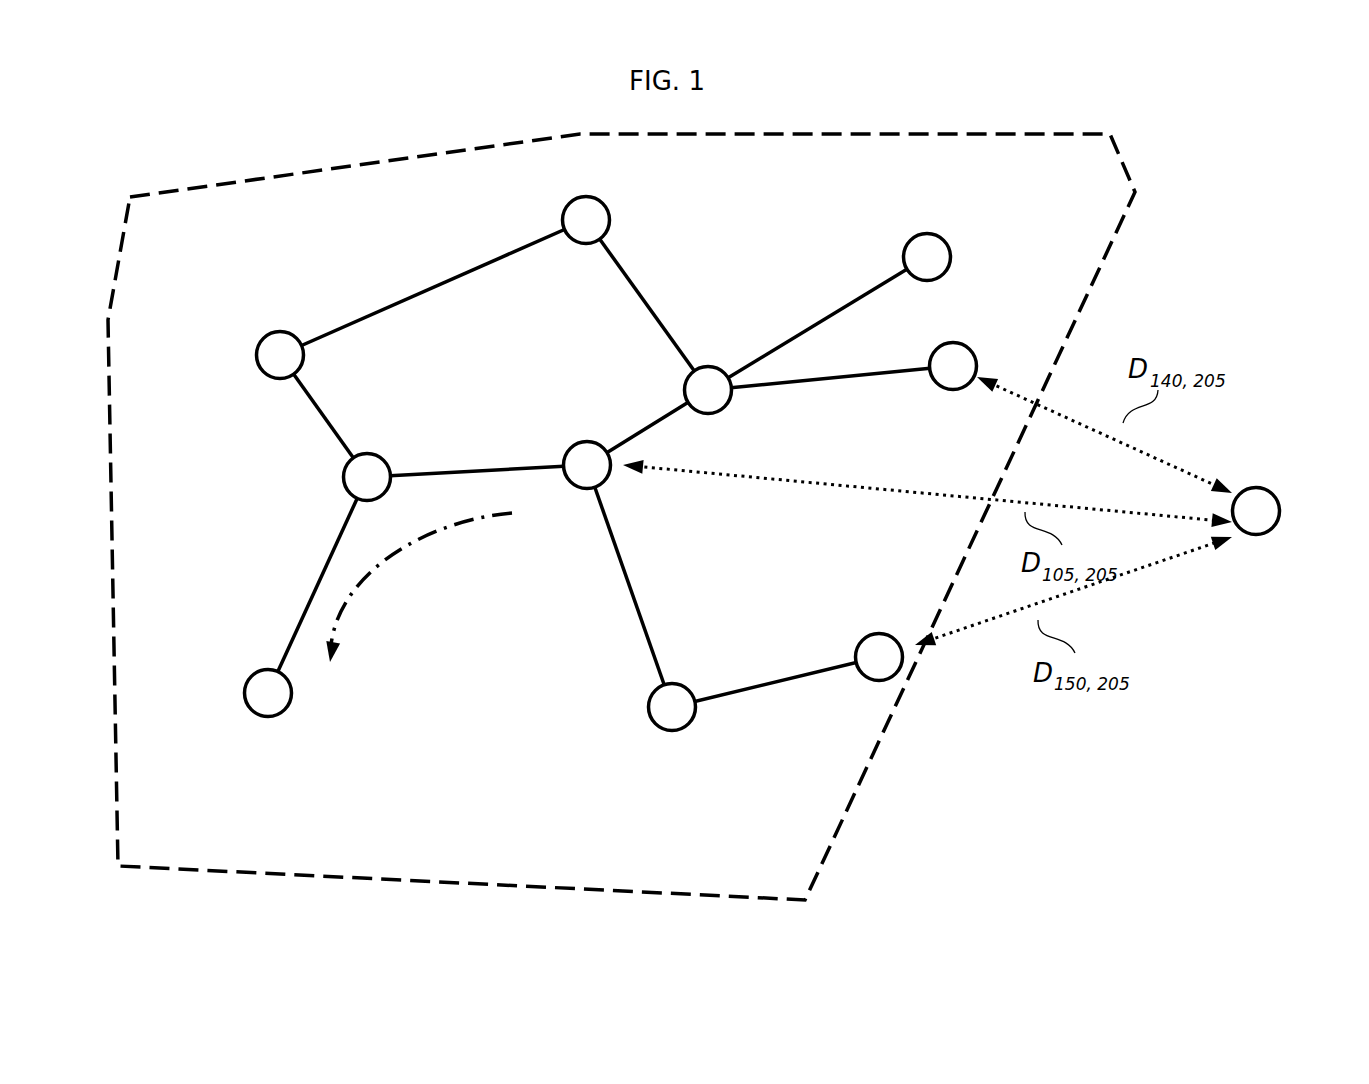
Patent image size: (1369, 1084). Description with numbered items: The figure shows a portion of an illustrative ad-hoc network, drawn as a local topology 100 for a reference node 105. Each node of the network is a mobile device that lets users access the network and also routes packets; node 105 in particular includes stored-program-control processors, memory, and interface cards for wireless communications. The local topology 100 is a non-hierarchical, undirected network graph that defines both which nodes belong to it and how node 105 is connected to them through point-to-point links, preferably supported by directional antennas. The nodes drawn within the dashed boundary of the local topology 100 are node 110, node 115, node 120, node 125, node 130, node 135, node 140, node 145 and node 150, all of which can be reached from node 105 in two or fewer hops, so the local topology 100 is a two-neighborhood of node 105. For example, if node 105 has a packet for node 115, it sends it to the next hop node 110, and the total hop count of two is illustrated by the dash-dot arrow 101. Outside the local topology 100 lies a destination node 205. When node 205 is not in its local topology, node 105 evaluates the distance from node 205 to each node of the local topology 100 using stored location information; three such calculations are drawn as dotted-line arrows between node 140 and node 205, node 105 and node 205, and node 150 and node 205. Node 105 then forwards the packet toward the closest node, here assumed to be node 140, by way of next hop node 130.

The local topology 100 is at (867, 838).
The arrow 101 is at (427, 562).
The node 105 is at (572, 418).
The node 110 is at (330, 478).
The node 115 is at (283, 728).
The node 120 is at (243, 340).
The node 125 is at (550, 212).
The node 130 is at (708, 353).
The node 135 is at (905, 230).
The node 140 is at (928, 388).
The node 145 is at (660, 755).
The node 150 is at (843, 643).
The node 205 is at (1243, 547).